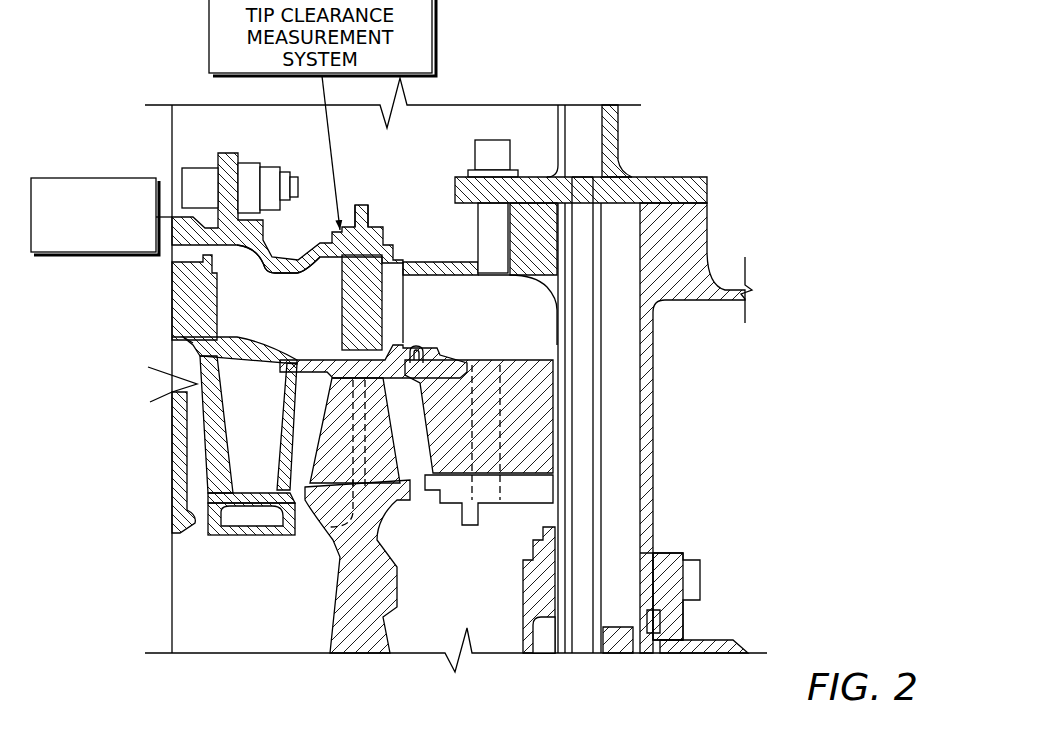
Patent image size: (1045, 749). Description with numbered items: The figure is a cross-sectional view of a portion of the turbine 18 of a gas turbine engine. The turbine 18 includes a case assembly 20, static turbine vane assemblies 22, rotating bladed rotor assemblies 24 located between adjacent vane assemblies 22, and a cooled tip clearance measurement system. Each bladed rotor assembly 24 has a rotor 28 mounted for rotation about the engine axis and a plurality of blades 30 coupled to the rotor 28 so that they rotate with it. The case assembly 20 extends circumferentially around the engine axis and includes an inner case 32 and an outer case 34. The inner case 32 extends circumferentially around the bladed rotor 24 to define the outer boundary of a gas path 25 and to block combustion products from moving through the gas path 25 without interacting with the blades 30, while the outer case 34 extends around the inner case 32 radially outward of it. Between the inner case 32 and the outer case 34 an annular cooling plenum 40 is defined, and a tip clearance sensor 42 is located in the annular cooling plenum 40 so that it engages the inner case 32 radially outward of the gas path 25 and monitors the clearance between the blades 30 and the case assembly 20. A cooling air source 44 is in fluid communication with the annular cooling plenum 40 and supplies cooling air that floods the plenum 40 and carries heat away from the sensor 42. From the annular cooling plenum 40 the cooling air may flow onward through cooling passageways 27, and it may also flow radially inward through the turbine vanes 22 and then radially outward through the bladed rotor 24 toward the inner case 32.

The turbine 18 is at (215, 128).
The case assembly 20 is at (487, 68).
The static turbine vane assemblies 22 is at (168, 345).
The bladed rotor assembly 24 is at (290, 567).
The gas path 25 is at (200, 450).
The cooling passageways 27 is at (257, 447).
The rotor 28 is at (330, 557).
The blades 30 is at (305, 455).
The inner case 32 is at (403, 340).
The outer case 34 is at (422, 255).
The annular cooling plenum 40 is at (272, 329).
The tip clearance sensor 42 is at (388, 298).
The cooling air source 44 is at (92, 178).